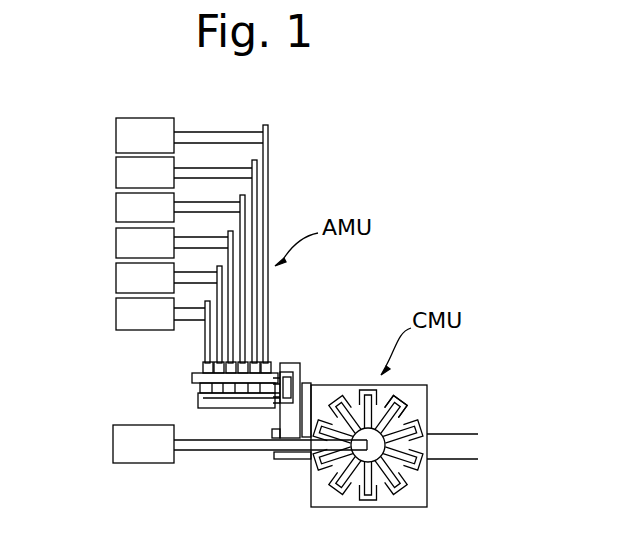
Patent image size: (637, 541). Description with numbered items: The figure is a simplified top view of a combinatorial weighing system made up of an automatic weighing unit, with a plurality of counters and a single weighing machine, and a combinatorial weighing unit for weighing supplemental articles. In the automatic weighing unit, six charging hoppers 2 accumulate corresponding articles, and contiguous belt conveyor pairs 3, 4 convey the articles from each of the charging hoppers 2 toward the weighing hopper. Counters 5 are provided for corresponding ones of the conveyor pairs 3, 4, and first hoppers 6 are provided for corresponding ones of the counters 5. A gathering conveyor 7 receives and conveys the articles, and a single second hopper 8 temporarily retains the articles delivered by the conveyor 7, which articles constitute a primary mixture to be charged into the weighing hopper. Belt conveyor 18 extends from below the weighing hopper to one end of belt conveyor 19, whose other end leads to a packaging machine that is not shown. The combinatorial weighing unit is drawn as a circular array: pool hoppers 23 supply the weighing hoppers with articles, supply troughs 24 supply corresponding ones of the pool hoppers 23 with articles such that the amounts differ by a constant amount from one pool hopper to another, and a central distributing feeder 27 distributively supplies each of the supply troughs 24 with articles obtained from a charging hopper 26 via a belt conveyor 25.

The charging hoppers 2 is at (118, 168).
The belt conveyor 3 is at (202, 137).
The belt conveyor 4 is at (268, 160).
The counters 5 is at (285, 350).
The first hoppers 6 is at (200, 388).
The gathering conveyor 7 is at (223, 408).
The second hopper 8 is at (298, 366).
The belt conveyor 18 is at (277, 421).
The belt conveyor 19 is at (280, 460).
The pool hoppers 23 is at (367, 388).
The supply troughs 24 is at (390, 408).
The belt conveyor 25 is at (217, 452).
The charging hopper 26 is at (118, 443).
The distributing feeder 27 is at (376, 441).